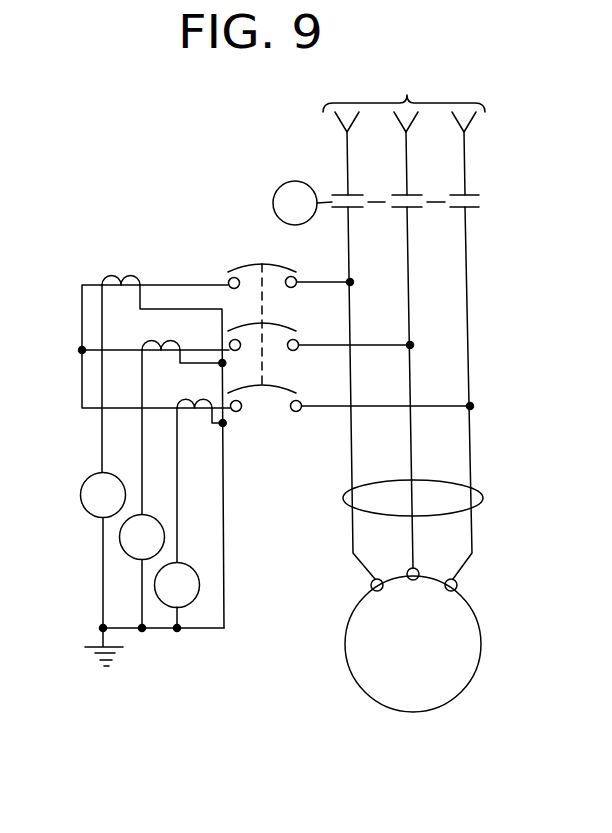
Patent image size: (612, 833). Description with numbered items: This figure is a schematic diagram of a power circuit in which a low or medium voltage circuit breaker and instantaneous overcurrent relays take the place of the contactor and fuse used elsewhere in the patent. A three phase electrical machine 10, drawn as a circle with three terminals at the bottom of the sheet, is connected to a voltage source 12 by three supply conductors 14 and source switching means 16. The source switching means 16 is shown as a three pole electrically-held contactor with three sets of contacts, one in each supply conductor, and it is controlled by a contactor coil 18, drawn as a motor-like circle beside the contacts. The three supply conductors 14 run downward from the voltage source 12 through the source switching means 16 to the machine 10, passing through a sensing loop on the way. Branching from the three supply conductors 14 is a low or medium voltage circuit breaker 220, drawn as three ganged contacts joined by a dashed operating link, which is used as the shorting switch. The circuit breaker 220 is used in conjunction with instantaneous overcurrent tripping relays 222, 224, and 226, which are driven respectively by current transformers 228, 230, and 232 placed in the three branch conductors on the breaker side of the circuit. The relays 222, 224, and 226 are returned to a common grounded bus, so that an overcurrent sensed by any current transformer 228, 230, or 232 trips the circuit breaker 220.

The three phase electrical machine 10 is at (356, 682).
The voltage source 12 is at (404, 98).
The supply conductors 14 is at (344, 499).
The source switching means 16 is at (482, 226).
The contactor coil 18 is at (284, 183).
The low or medium voltage circuit breaker 220 is at (273, 388).
The instantaneous overcurrent tripping relay 222 is at (81, 496).
The instantaneous overcurrent tripping relay 224 is at (121, 547).
The instantaneous overcurrent tripping relay 226 is at (156, 593).
The current transformer 228 is at (122, 274).
The current transformer 230 is at (160, 338).
The current transformer 232 is at (193, 396).